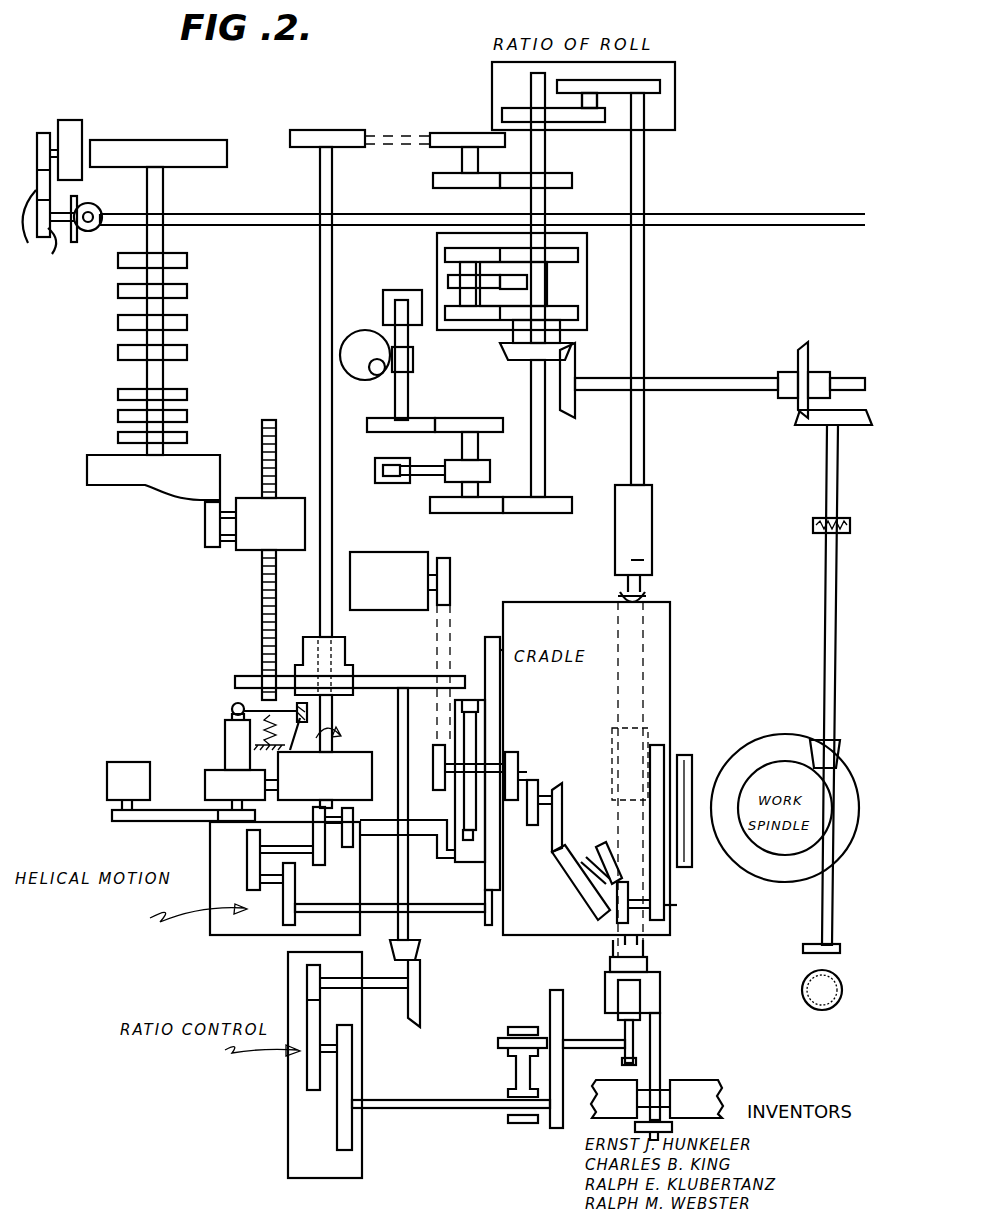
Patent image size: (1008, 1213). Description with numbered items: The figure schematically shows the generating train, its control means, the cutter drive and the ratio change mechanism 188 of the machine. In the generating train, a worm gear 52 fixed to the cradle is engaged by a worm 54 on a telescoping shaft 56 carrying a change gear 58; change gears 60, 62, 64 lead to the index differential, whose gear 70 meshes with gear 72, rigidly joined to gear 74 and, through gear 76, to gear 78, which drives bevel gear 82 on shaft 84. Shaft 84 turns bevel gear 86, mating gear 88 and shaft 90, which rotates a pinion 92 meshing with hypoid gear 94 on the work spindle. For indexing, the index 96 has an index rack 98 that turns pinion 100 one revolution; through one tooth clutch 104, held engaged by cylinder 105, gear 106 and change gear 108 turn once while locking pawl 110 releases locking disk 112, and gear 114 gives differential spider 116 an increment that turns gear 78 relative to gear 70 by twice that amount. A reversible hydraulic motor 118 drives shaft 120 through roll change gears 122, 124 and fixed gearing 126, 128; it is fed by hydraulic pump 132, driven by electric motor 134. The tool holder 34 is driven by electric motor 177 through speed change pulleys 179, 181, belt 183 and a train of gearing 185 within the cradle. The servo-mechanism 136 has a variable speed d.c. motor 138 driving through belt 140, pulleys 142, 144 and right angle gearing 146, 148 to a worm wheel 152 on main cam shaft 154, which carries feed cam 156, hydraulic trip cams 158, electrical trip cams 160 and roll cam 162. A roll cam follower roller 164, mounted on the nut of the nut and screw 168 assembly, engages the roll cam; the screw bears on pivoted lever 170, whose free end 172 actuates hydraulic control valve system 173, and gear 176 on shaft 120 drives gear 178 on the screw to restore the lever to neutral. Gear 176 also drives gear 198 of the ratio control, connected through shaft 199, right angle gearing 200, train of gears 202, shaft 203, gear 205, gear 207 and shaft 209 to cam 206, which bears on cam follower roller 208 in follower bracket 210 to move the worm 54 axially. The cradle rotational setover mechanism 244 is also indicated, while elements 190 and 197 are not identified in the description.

The tool holder 34 is at (672, 765).
The worm gear 52 is at (651, 604).
The worm 54 is at (648, 735).
The telescoping shaft 56 is at (644, 160).
The change gear 58 is at (660, 88).
The change gear 60 is at (660, 82).
The change gear 62 is at (590, 122).
The change gear 64 is at (510, 108).
The gear 70 is at (578, 252).
The gear 72 is at (452, 248).
The gear 74 is at (448, 282).
The gear 76 is at (472, 322).
The gear 78 is at (578, 312).
The bevel gear 82 is at (575, 366).
The shaft 84 is at (718, 378).
The bevel gear 86 is at (806, 358).
The mating gear 88 is at (818, 425).
The shaft 90 is at (825, 578).
The pinion 92 is at (812, 745).
The hypoid gear 94 is at (720, 870).
The index 96 is at (355, 388).
The index rack 98 is at (370, 322).
The pinion 100 is at (413, 362).
The one tooth clutch 104 is at (412, 412).
The cylinder 105 is at (410, 290).
The gear 106 is at (500, 408).
The change gear 108 is at (466, 512).
The locking pawl 110 is at (432, 466).
The locking disk 112 is at (490, 470).
The gear 114 is at (532, 512).
The differential spider 116 is at (547, 290).
The reversible hydraulic motor 118 is at (347, 750).
The shaft 120 is at (332, 180).
The roll change gear 122 is at (325, 132).
The roll change gear 124 is at (446, 133).
The fixed gearing 126 is at (433, 180).
The fixed gearing 128 is at (572, 180).
The hydraulic pump 132 is at (250, 795).
The motor 134 is at (150, 763).
The servo-mechanism 136 is at (90, 348).
The variable speed d.c. motor 138 is at (76, 128).
The belt 140 is at (25, 223).
The pulley 142 is at (40, 133).
The pulley 144 is at (47, 252).
The right angle gearing 146 is at (75, 242).
The right angle gearing 148 is at (96, 205).
The worm wheel 152 is at (207, 214).
The main cam shaft 154 is at (163, 187).
The feed cam 156 is at (185, 140).
The hydraulic trip cams 158 is at (197, 365).
The electrical trip cams 160 is at (112, 387).
The roll cam 162 is at (108, 487).
The roll cam follower roller 164 is at (205, 540).
The screw 168 is at (270, 420).
The pivoted lever 170 is at (325, 776).
The free end 172 is at (232, 709).
The hydraulic control valve system 173 is at (212, 764).
The gear 176 is at (295, 672).
The electric motor 177 is at (372, 560).
The gear 178 is at (245, 676).
The speed change pulley 179 is at (450, 565).
The speed change pulley 181 is at (435, 792).
The belt 183 is at (446, 628).
The train of gearing 185 is at (578, 753).
The ratio change mechanism 188 is at (255, 1065).
The bar 190 is at (485, 880).
The housing 197 is at (455, 812).
The gear 198 is at (366, 680).
The shaft 199 is at (410, 922).
The right angle gearing 200 is at (412, 940).
The train of gears 202 is at (300, 1000).
The shaft 203 is at (398, 1108).
The gear 205 is at (560, 1106).
The cam 206 is at (633, 1062).
The gear 207 is at (550, 1004).
The cam follower roller 208 is at (640, 1000).
The shaft 209 is at (576, 1050).
The follower bracket 210 is at (655, 975).
The cradle rotational setover mechanism 244 is at (685, 1066).